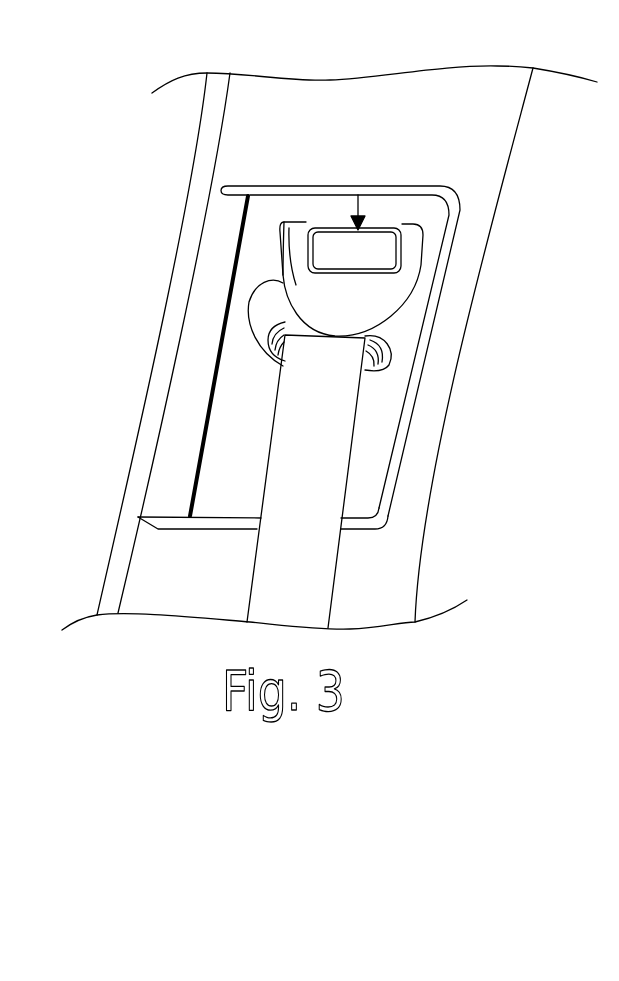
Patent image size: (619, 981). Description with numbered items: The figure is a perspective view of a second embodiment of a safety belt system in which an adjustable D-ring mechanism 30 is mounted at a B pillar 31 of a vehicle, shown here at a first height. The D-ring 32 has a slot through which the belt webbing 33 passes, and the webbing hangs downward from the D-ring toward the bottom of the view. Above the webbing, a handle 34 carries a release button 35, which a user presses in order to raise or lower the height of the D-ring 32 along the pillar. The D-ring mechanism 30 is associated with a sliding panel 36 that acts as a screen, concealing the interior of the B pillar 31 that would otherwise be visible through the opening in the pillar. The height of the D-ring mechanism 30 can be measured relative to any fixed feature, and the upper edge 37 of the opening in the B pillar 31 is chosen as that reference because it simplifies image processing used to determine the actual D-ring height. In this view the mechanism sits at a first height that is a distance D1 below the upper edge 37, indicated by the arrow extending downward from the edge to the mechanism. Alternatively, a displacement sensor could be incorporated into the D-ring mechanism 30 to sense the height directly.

The D-ring mechanism 30 is at (319, 321).
The B pillar 31 is at (265, 140).
The D-ring 32 is at (262, 315).
The belt webbing 33 is at (287, 458).
The handle 34 is at (298, 268).
The release button 35 is at (380, 249).
The sliding panel 36 is at (227, 503).
The upper edge 37 is at (330, 186).
The distance D1 is at (358, 205).